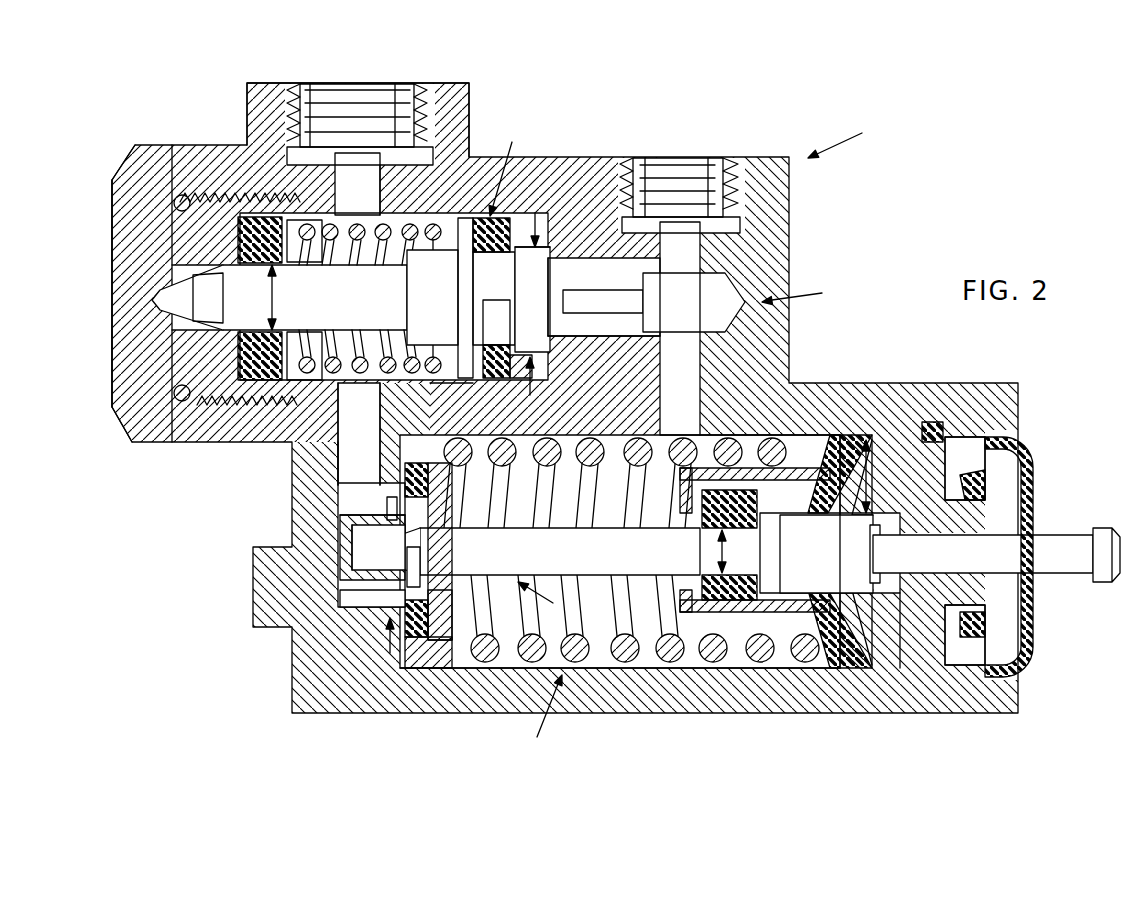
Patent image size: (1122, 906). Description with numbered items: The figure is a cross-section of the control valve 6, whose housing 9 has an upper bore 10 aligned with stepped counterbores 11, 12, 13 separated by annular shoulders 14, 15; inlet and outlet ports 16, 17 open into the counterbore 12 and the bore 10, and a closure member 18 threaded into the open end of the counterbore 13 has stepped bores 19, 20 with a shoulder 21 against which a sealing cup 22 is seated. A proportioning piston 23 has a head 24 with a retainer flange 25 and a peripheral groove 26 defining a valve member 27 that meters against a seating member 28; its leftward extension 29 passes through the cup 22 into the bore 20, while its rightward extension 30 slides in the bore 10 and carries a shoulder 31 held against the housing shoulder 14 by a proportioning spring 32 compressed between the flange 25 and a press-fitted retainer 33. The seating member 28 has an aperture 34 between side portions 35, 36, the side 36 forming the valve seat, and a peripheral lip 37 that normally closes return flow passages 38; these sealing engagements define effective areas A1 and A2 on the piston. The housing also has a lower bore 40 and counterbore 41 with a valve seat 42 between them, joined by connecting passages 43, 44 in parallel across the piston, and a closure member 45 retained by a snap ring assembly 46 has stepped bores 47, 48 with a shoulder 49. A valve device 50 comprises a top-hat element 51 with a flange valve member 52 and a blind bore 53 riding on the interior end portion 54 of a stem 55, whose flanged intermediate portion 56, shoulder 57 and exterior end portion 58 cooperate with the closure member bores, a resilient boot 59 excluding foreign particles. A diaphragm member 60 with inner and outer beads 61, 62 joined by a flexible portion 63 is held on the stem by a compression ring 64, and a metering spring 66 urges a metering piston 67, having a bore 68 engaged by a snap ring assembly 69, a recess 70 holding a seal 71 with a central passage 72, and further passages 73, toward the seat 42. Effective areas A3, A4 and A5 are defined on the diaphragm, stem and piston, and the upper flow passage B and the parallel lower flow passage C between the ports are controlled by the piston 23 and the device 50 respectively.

The control valve 6 is at (880, 134).
The housing 9 is at (789, 215).
The upper bore 10 is at (702, 290).
The counterbore 11 is at (555, 405).
The counterbore 12 is at (393, 218).
The counterbore 13 is at (336, 120).
The annular shoulder 14 is at (583, 375).
The annular shoulder 15 is at (532, 390).
The inlet port 16 is at (395, 100).
The outlet port 17 is at (720, 185).
The closure member 18 is at (112, 238).
The larger stepped bore 19 is at (250, 200).
The smaller stepped bore 20 is at (200, 270).
The annular shoulder 21 is at (238, 358).
The sealing cup 22 is at (262, 402).
The proportioning piston 23 is at (160, 383).
The annular head 24 is at (438, 309).
The retainer flange 25 is at (409, 298).
The peripheral groove 26 is at (492, 340).
The metering valve member 27 is at (532, 299).
The seating member 28 is at (497, 185).
The leftward extension 29 is at (258, 309).
The rightward extension 30 is at (645, 320).
The annular shoulder 31 is at (585, 275).
The proportioning spring 32 is at (358, 215).
The annular retainer 33 is at (348, 248).
The aperture 34 is at (494, 298).
The side portion 35 is at (465, 218).
The valve seat side 36 is at (535, 235).
The peripheral lip 37 is at (455, 390).
The return flow passages 38 is at (498, 380).
The lower bore 40 is at (357, 480).
The counterbore 41 is at (600, 668).
The valve seat 42 is at (415, 640).
The connecting passage 43 is at (345, 475).
The connecting passage 44 is at (704, 388).
The closure member 45 is at (965, 468).
The snap ring and groove assembly 46 is at (935, 420).
The larger stepped bore 47 is at (870, 610).
The smaller stepped bore 48 is at (983, 538).
The annular shoulder 49 is at (925, 607).
The valve device 50 is at (585, 620).
The top-hat element 51 is at (352, 540).
The flange valve member 52 is at (340, 600).
The blind bore 53 is at (340, 515).
The interior end portion 54 is at (340, 560).
The stem 55 is at (608, 561).
The flanged intermediate portion 56 is at (882, 560).
The annular shoulder 57 is at (870, 592).
The exterior end portion 58 is at (1062, 533).
The resilient boot 59 is at (1035, 460).
The diaphragm member 60 is at (848, 435).
The inner bead portion 61 is at (700, 510).
The outer bead portion 62 is at (860, 435).
The flexible diaphragm portion 63 is at (838, 500).
The compression ring 64 is at (680, 604).
The metering spring 66 is at (585, 470).
The metering piston member 67 is at (425, 668).
The central bore 68 is at (440, 540).
The snap ring and groove assembly 69 is at (422, 568).
The recess 70 is at (455, 615).
The metering valve member 71 is at (405, 470).
The central passage 72 is at (388, 500).
The passages 73 is at (455, 485).
The effective closing area A1 is at (280, 300).
The effective area A2 is at (545, 220).
The annular effective area A3 is at (872, 478).
The effective area A4 is at (728, 552).
The annular effective area A5 is at (385, 650).
The flow passage B is at (838, 301).
The flow passage C is at (538, 772).